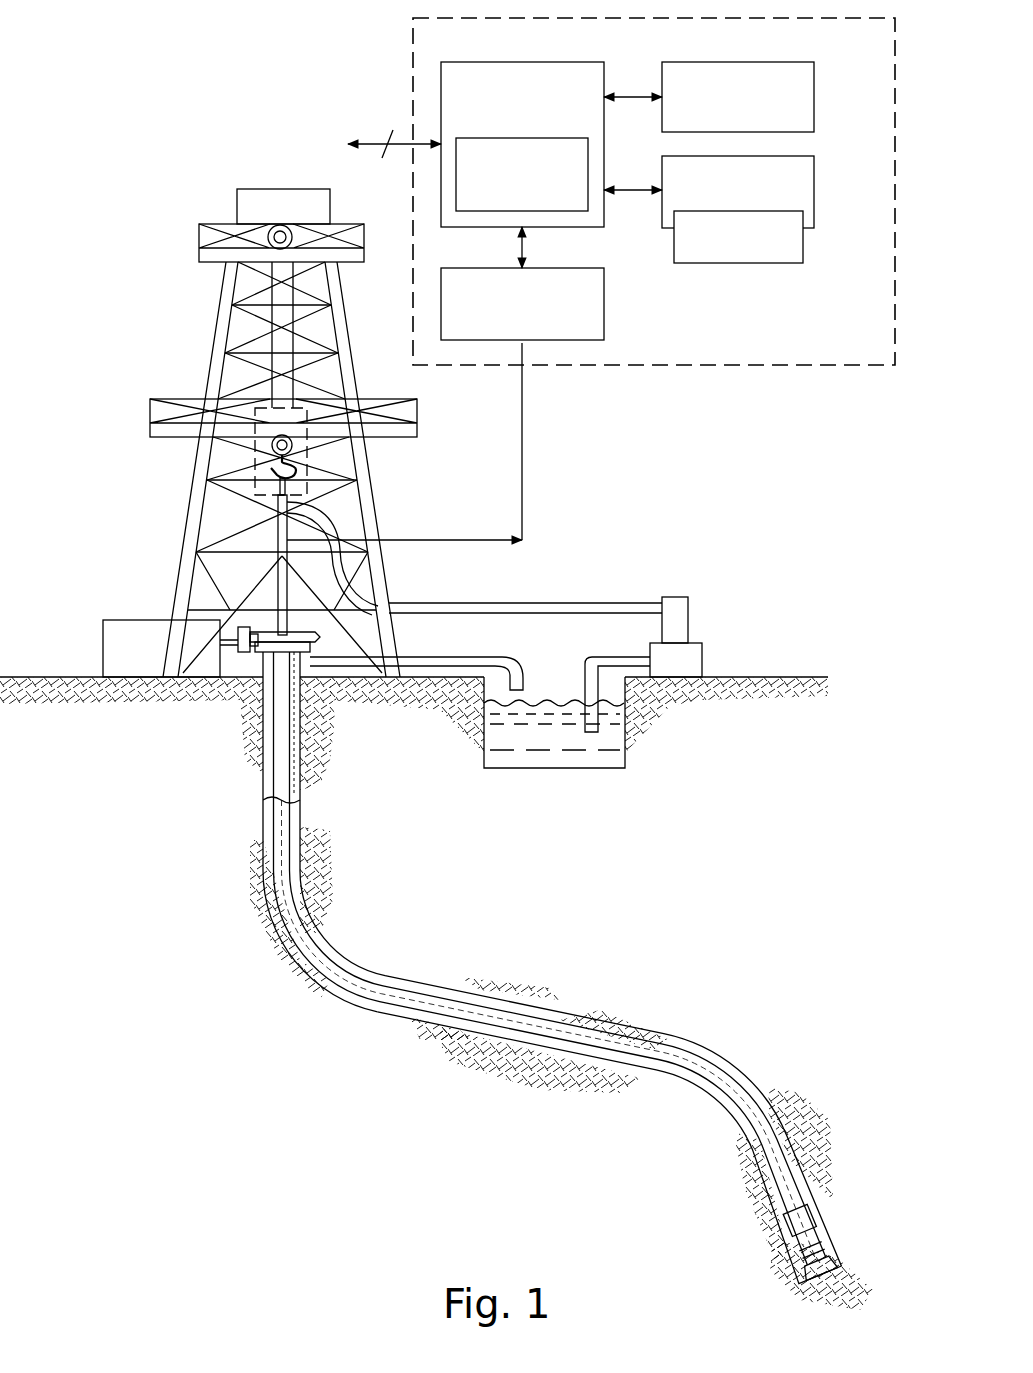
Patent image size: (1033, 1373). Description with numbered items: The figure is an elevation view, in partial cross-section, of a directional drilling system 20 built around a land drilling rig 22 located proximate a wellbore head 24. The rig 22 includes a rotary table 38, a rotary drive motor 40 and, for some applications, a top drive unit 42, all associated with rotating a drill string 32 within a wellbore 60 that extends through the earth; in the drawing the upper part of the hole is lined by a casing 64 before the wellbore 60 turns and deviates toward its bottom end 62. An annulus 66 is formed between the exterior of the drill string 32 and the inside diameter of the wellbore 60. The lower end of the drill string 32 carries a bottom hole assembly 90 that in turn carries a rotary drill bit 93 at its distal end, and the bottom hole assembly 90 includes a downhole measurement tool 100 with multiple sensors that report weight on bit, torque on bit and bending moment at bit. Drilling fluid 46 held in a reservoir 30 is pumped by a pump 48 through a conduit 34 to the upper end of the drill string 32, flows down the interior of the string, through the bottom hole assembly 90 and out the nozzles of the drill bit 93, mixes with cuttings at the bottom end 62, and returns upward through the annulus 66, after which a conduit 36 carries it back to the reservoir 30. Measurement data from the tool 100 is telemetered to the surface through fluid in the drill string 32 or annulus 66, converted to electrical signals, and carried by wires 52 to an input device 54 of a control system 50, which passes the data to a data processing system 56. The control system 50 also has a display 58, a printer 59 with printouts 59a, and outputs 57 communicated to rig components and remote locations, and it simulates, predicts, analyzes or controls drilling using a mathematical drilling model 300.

The directional drilling system 20 is at (170, 85).
The land drilling rig 22 is at (213, 345).
The wellbore head 24 is at (249, 658).
The reservoir 30 is at (517, 768).
The drill string 32 is at (303, 955).
The conduit 34 is at (613, 603).
The conduit 36 is at (516, 659).
The rotary table 38 is at (327, 640).
The rotary drive motor 40 is at (103, 648).
The top drive unit 42 is at (253, 458).
The drilling fluid 46 is at (590, 760).
The pump 48 is at (688, 620).
The control system 50 is at (695, 370).
The electrical conduit or wires 52 is at (523, 442).
The input device 54 is at (604, 298).
The data processing system 56 is at (499, 151).
The outputs 57 is at (380, 140).
The display 58 is at (814, 100).
The printer 59 is at (814, 193).
The printouts 59a is at (803, 237).
The wellbore 60 is at (390, 963).
The bottom end 62 is at (800, 1270).
The casing 64 is at (263, 790).
The annulus 66 is at (266, 855).
The bottom hole assembly 90 is at (825, 1227).
The rotary drill bit 93 is at (828, 1257).
The downhole measurement tool 100 is at (790, 1220).
The drilling model 300 is at (555, 212).